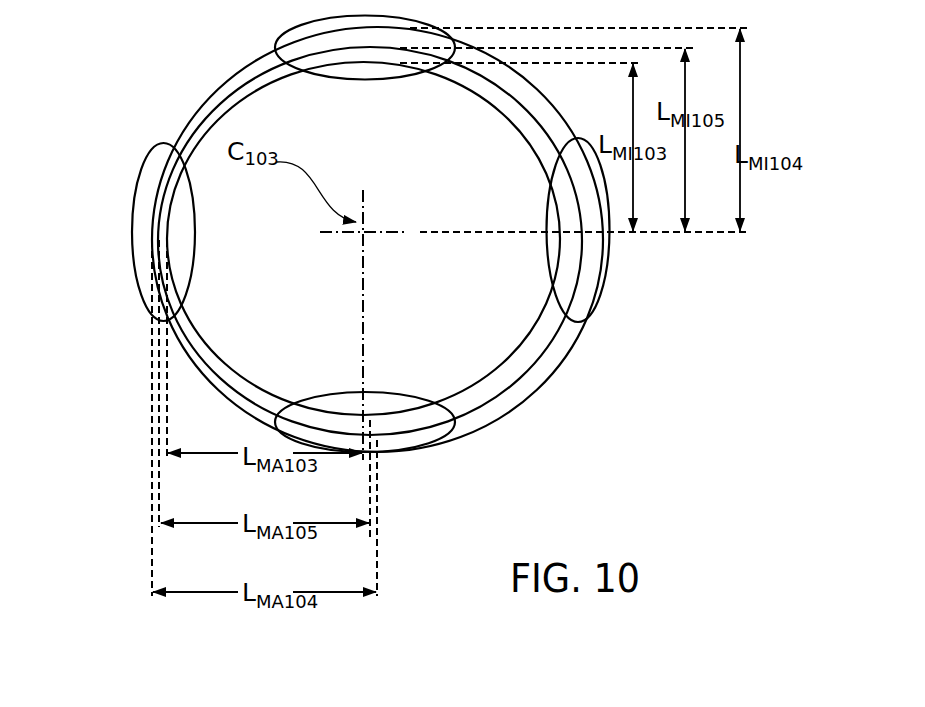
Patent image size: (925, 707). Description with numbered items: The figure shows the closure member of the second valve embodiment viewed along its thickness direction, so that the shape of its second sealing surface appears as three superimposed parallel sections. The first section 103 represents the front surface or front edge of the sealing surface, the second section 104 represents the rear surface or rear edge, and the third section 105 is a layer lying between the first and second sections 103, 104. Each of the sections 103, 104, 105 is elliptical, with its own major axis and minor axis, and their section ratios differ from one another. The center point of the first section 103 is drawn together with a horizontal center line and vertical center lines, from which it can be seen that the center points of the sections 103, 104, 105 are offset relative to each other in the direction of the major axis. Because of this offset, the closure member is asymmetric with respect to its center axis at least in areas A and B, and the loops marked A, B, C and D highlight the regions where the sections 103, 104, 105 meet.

The first section 103 is at (459, 381).
The second section 104 is at (579, 341).
The third section 105 is at (522, 372).
The area A is at (126, 236).
The area B is at (606, 308).
The top connecting loop C is at (276, 32).
The bottom connecting loop D is at (406, 458).